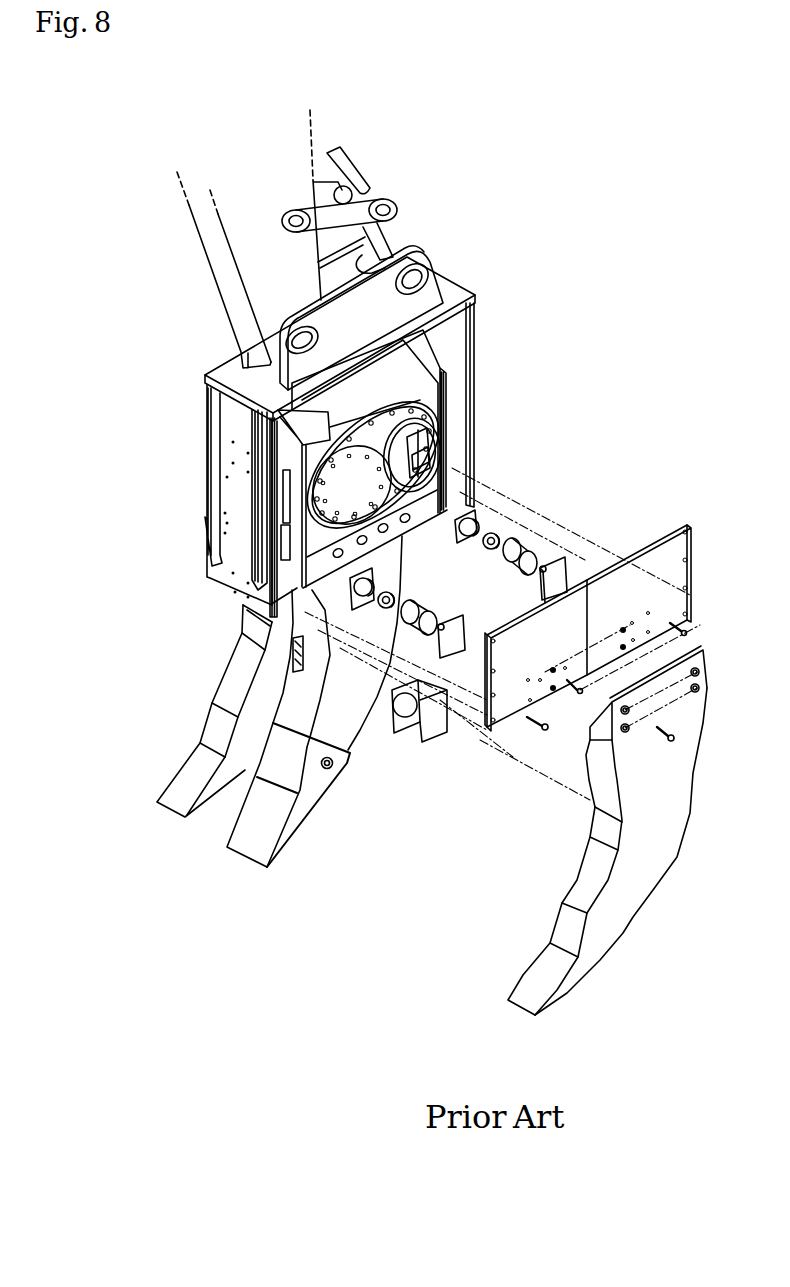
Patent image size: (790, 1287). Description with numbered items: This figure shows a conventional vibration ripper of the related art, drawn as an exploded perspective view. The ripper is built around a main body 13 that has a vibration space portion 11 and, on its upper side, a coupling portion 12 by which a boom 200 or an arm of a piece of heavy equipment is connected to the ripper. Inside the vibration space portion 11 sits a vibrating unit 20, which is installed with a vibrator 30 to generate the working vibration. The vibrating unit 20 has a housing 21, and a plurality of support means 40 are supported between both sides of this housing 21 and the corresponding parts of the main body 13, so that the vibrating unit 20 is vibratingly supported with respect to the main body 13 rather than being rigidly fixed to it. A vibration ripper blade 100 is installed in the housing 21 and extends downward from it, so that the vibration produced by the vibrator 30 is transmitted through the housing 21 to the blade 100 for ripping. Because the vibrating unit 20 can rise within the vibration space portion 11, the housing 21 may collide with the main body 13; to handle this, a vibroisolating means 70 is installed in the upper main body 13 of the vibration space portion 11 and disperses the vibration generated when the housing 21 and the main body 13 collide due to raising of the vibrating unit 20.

The boom 200 is at (248, 262).
The coupling portion 12 is at (428, 300).
The main body 13 is at (369, 412).
The vibration space portion 11 is at (450, 352).
The vibrating unit 20 is at (440, 380).
The housing 21 is at (440, 395).
The support means 40 is at (430, 448).
The vibroisolating means 70 is at (282, 440).
The vibrator 30 is at (242, 607).
The vibration ripper blade 100 is at (343, 740).